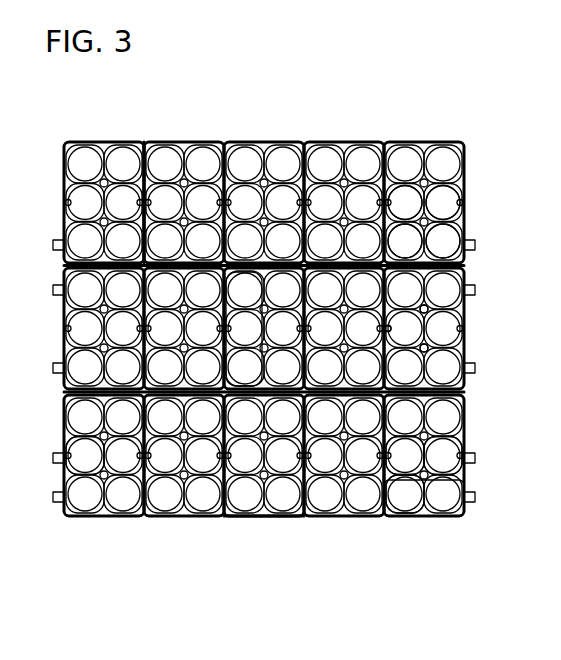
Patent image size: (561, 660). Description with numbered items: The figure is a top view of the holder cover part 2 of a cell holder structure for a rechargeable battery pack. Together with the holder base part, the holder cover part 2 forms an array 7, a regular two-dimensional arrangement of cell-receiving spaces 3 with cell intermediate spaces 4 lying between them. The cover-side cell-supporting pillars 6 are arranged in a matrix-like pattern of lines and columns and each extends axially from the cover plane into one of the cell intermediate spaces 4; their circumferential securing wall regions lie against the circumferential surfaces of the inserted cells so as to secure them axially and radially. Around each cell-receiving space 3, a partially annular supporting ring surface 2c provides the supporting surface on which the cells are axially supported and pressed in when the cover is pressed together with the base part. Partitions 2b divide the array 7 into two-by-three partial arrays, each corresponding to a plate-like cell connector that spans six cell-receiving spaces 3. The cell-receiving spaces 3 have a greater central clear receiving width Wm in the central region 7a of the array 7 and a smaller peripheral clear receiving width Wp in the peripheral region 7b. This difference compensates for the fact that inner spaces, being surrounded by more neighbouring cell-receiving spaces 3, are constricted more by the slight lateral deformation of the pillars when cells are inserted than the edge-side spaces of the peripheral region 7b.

The holder cover part 2 is at (366, 112).
The partition 2b is at (375, 455).
The supporting ring surface 2c is at (415, 512).
The cell-receiving space 3 is at (447, 239).
The cell intermediate space 4 is at (428, 466).
The cover-side cell-supporting pillar 6 is at (400, 346).
The array 7 is at (232, 237).
The central region of the array 7a is at (283, 347).
The peripheral region of the array 7b is at (143, 147).
The central clear receiving width Wm is at (288, 500).
The peripheral clear receiving width Wp is at (95, 445).